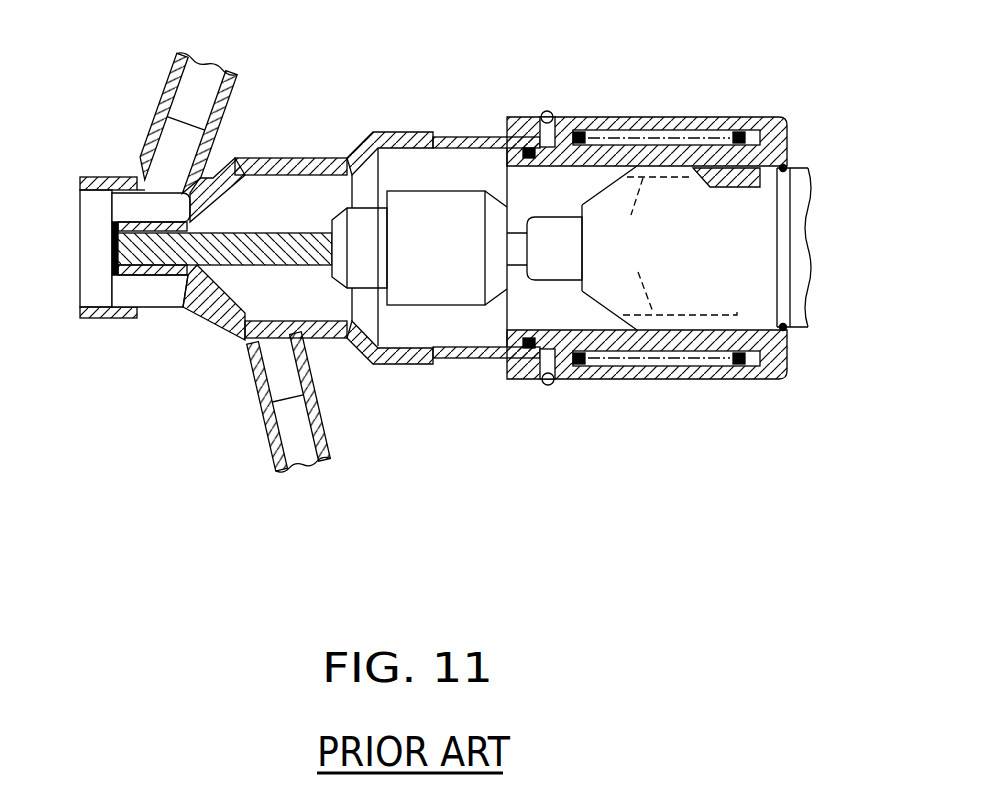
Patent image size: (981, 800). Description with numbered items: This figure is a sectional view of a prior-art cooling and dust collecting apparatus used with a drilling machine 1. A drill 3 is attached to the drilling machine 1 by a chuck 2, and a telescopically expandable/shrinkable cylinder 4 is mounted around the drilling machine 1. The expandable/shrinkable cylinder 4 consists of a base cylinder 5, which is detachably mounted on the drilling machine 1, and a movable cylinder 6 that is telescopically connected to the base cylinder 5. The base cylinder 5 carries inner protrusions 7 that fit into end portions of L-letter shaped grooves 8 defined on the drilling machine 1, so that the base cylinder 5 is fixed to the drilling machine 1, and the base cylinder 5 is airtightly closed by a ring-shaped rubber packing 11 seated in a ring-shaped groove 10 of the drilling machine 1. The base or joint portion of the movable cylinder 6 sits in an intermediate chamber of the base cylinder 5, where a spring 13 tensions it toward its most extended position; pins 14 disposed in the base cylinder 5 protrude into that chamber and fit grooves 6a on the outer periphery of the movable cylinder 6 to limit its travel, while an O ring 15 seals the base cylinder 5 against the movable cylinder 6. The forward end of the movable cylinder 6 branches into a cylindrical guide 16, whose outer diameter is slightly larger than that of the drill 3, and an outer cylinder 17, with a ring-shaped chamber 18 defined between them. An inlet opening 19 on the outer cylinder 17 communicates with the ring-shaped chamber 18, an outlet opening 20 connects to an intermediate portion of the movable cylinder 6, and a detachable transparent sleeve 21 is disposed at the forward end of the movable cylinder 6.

The drilling machine 1 is at (747, 243).
The chuck 2 is at (410, 207).
The drill 3 is at (288, 258).
The telescopically expandable/shrinkable cylinder 4 is at (397, 130).
The base cylinder 5 is at (650, 117).
The movable cylinder 6 is at (300, 166).
The grooves 6a is at (448, 137).
The inner protrusions 7 is at (727, 187).
The L-letter shaped grooves 8 is at (645, 276).
The ring-shaped groove 10 is at (787, 190).
The ring-shaped rubber packing 11 is at (786, 331).
The spring 13 is at (593, 132).
The pins 14 is at (545, 111).
The O ring 15 is at (524, 159).
The cylindrical guide 16 is at (157, 275).
The outer cylinder 17 is at (177, 308).
The ring-shaped chamber 18 is at (127, 290).
The inlet opening 19 is at (147, 128).
The outlet opening 20 is at (248, 402).
The detachable transparent sleeve 21 is at (90, 186).